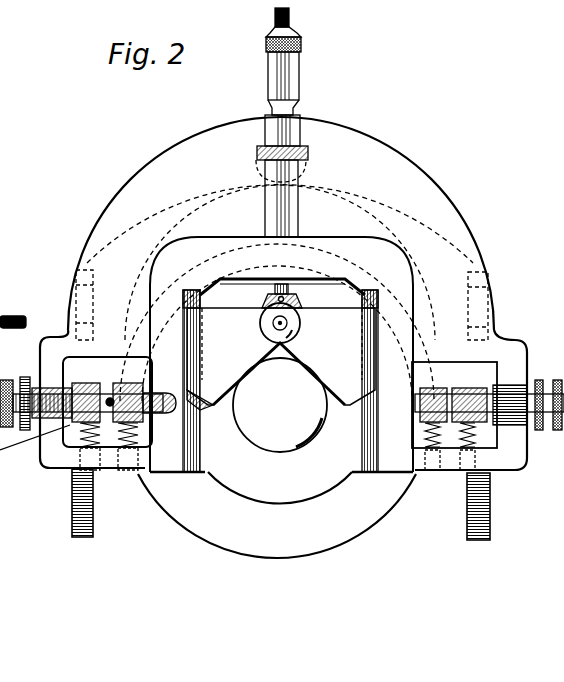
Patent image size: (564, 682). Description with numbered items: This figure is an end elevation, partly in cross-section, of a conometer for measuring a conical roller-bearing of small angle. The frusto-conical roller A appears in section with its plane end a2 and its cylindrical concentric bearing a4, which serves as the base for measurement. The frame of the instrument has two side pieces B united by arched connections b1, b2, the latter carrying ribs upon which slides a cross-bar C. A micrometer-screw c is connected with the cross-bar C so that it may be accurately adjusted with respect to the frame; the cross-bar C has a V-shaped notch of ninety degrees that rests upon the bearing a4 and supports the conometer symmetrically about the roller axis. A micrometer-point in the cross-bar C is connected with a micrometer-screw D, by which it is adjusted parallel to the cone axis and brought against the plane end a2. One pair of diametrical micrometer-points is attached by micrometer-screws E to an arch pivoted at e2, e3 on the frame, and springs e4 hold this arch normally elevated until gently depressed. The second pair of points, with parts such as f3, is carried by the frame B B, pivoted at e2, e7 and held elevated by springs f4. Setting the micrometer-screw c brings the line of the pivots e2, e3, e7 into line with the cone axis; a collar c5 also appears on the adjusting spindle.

The frusto-conical roller A is at (348, 533).
The side pieces B is at (490, 530).
The cross-bar C is at (272, 80).
The micrometer-screw D is at (266, 325).
The micrometer-screws E is at (543, 385).
The plane end a2 is at (280, 488).
The cylindrical concentric bearing a4 is at (280, 405).
The arched connection b1 is at (209, 207).
The arched connection b2 is at (402, 268).
The micrometer-screw c is at (320, 318).
The collar c5 is at (312, 167).
The pivot e2 is at (460, 423).
The pivot e3 is at (412, 435).
The springs e4 is at (437, 447).
The pivot e7 is at (497, 432).
The jaw f3 is at (363, 443).
The springs f4 is at (480, 470).